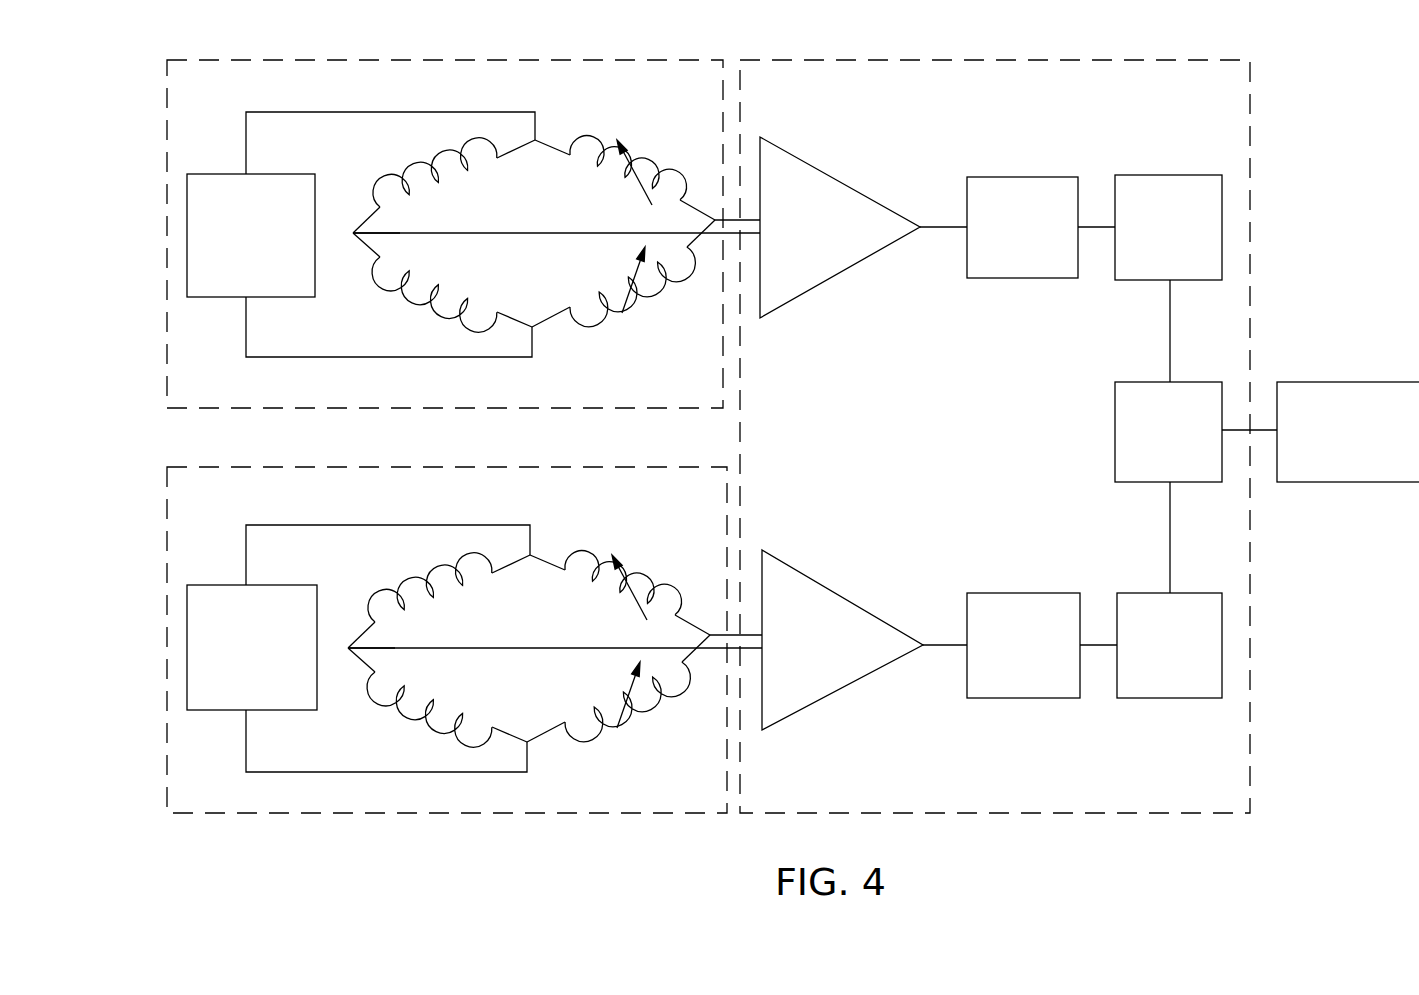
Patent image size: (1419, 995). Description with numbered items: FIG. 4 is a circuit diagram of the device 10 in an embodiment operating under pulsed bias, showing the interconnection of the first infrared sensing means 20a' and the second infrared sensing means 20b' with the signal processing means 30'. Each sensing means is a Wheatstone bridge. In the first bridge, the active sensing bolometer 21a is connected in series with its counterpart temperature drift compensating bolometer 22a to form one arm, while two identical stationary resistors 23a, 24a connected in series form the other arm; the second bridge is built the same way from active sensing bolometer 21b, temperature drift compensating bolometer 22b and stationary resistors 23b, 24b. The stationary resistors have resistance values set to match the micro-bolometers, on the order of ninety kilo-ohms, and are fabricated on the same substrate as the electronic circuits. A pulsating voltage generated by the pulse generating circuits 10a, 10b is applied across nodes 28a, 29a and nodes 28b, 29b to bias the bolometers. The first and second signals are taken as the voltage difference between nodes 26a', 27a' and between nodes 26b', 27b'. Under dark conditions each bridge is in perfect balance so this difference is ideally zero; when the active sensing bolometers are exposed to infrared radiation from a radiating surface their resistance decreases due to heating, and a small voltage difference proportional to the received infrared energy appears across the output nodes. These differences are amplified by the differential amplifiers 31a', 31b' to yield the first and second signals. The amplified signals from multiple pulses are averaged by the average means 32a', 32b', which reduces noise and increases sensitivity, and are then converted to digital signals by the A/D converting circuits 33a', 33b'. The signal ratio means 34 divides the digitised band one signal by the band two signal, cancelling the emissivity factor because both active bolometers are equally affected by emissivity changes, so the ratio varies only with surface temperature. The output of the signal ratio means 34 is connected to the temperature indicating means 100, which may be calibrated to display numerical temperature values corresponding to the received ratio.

The device 10 is at (558, 838).
The pulse generating circuit 10a is at (232, 174).
The pulse generating circuit 10b is at (232, 585).
The first infrared sensing means 20a' is at (445, 218).
The second infrared sensing means 20b' is at (447, 622).
The signal processing means 30' is at (995, 420).
The active sensing bolometer 21a is at (663, 187).
The active sensing bolometer 21b is at (648, 598).
The temperature drift compensating bolometer 22a is at (652, 280).
The temperature drift compensating bolometer 22b is at (640, 693).
The stationary resistor 23a is at (392, 195).
The stationary resistor 23b is at (400, 603).
The stationary resistor 24a is at (417, 287).
The stationary resistor 24b is at (428, 710).
The node 26a' is at (556, 193).
The node 26b' is at (555, 605).
The node 27a' is at (364, 207).
The node 27b' is at (360, 619).
The node 28a is at (538, 138).
The node 28b is at (532, 553).
The node 29a is at (537, 330).
The node 29b is at (532, 745).
The differential amplifier 31a' is at (863, 227).
The differential amplifier 31b' is at (864, 640).
The average means 32a' is at (1041, 204).
The average means 32b' is at (1042, 622).
The A/D converting circuit 33a' is at (1168, 256).
The A/D converting circuit 33b' is at (1174, 590).
The signal ratio means 34 is at (1200, 381).
The temperature indicating means 100 is at (1362, 381).